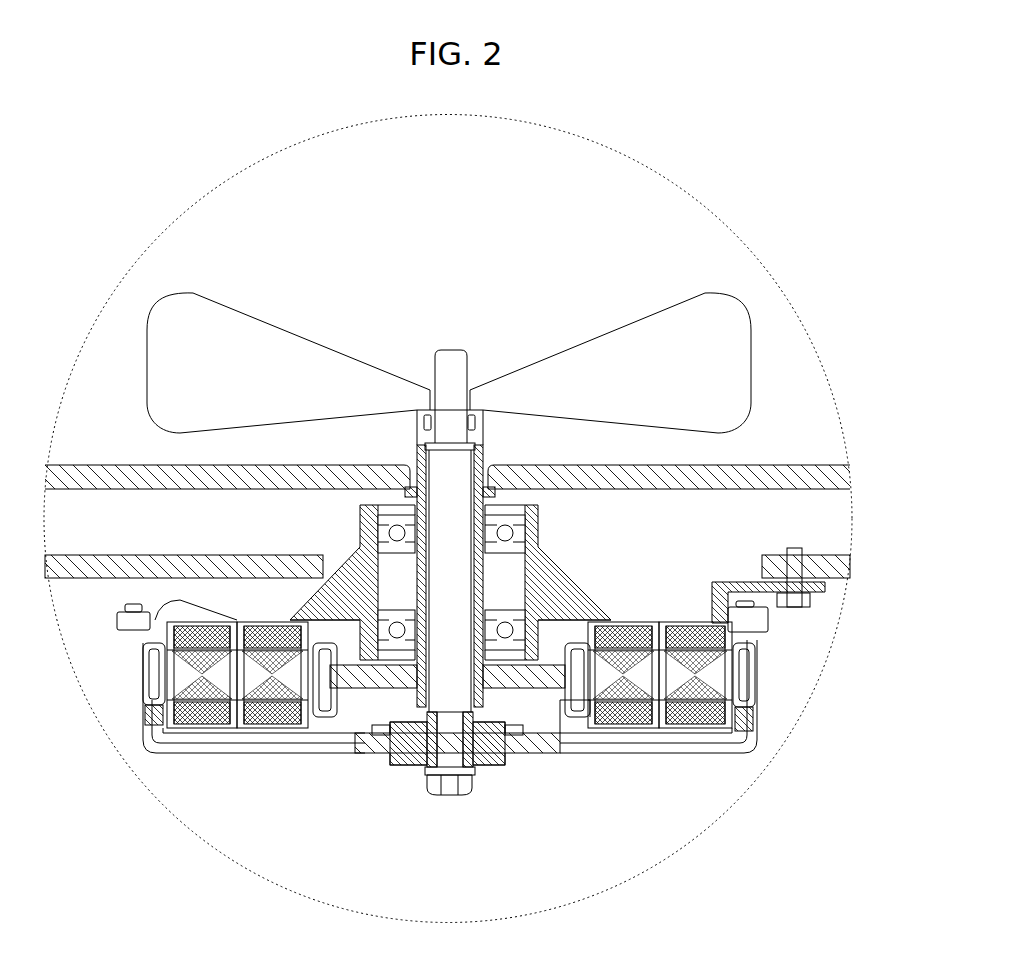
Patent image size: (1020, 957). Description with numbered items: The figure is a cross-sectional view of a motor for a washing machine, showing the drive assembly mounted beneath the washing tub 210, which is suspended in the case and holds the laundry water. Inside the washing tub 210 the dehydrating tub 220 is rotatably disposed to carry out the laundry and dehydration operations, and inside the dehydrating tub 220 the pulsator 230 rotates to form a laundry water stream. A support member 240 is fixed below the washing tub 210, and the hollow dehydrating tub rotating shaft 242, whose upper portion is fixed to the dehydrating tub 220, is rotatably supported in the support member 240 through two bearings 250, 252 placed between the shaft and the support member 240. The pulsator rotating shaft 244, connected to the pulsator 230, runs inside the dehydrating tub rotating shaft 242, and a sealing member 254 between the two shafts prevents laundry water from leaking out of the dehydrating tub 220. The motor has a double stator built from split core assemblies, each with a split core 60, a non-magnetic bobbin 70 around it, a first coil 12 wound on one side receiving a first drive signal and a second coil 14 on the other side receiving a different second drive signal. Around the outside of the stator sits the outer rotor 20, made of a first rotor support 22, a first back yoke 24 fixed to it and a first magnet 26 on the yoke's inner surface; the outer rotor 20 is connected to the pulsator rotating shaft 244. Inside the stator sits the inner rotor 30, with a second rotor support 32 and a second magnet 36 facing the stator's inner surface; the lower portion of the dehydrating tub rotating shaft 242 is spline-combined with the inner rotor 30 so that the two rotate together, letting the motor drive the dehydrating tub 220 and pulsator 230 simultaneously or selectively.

The pulsator 230 is at (713, 408).
The dehydrating tub 220 is at (745, 489).
The washing tub 210 is at (233, 566).
The sealing member 254 is at (476, 430).
The bearing 250 is at (520, 523).
The support member 240 is at (560, 585).
The dehydrating tub rotating shaft 242 is at (478, 568).
The bearing 252 is at (500, 632).
The pulsator rotating shaft 244 is at (437, 683).
The first coil 12 is at (215, 722).
The second coil 14 is at (283, 722).
The non-magnetic bobbin 70 is at (253, 626).
The split core 60 is at (178, 675).
The outer rotor 20 is at (764, 676).
The first back yoke 24 is at (752, 650).
The first magnet 26 is at (742, 690).
The first rotor support 22 is at (570, 738).
The inner rotor 30 is at (553, 692).
The second rotor support 32 is at (535, 683).
The second magnet 36 is at (580, 698).